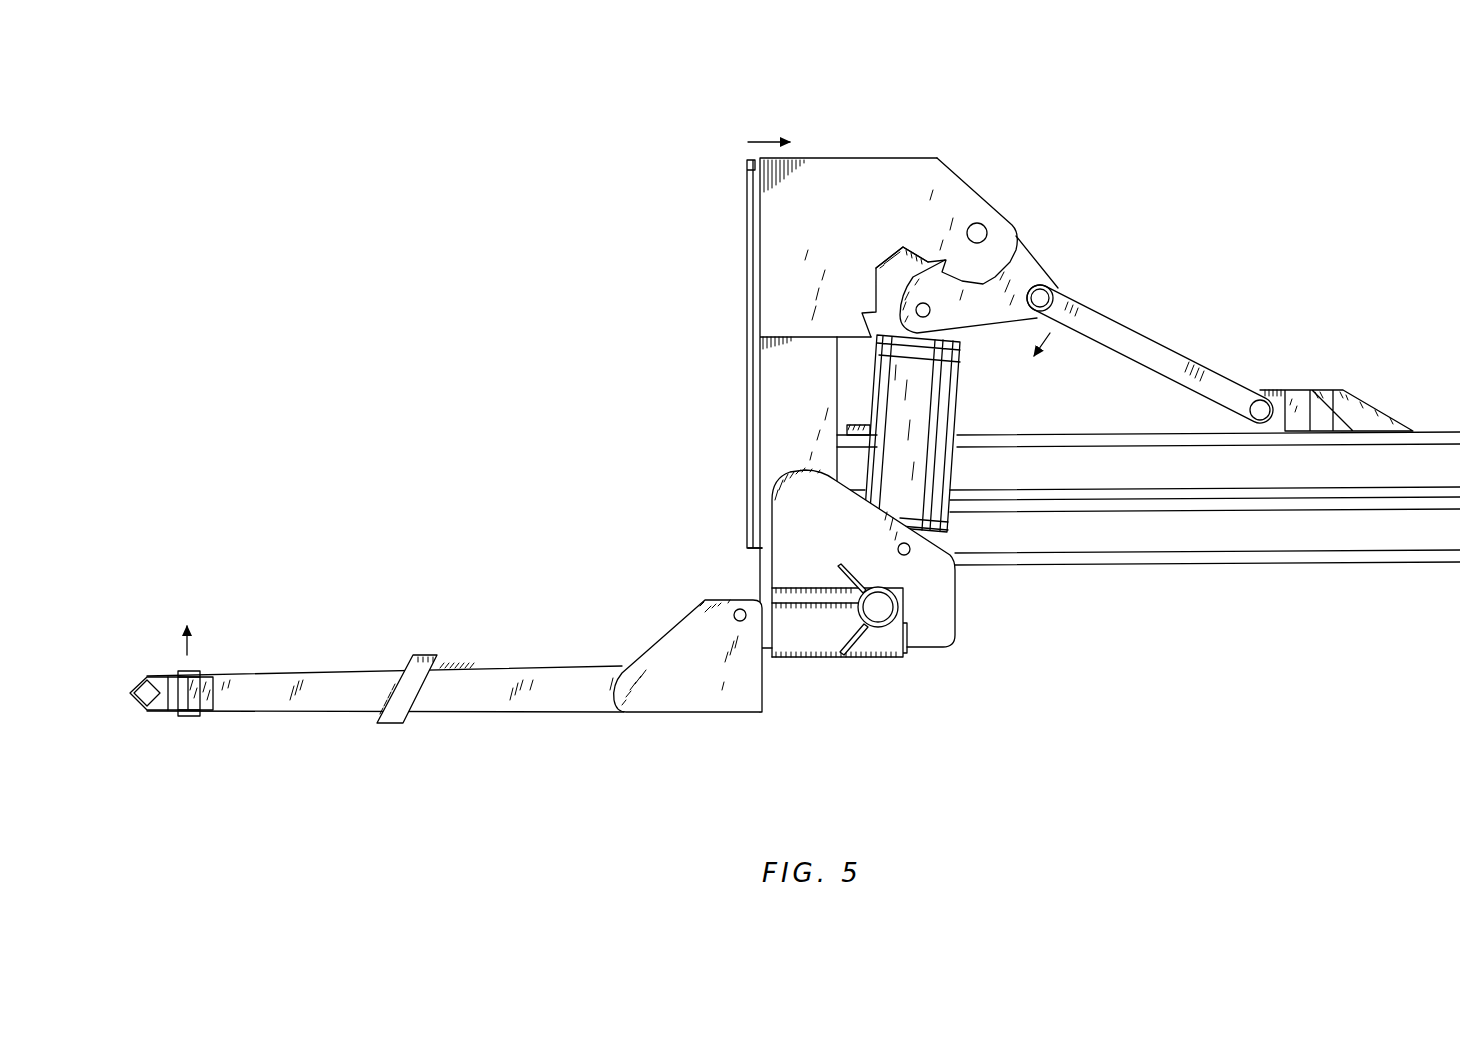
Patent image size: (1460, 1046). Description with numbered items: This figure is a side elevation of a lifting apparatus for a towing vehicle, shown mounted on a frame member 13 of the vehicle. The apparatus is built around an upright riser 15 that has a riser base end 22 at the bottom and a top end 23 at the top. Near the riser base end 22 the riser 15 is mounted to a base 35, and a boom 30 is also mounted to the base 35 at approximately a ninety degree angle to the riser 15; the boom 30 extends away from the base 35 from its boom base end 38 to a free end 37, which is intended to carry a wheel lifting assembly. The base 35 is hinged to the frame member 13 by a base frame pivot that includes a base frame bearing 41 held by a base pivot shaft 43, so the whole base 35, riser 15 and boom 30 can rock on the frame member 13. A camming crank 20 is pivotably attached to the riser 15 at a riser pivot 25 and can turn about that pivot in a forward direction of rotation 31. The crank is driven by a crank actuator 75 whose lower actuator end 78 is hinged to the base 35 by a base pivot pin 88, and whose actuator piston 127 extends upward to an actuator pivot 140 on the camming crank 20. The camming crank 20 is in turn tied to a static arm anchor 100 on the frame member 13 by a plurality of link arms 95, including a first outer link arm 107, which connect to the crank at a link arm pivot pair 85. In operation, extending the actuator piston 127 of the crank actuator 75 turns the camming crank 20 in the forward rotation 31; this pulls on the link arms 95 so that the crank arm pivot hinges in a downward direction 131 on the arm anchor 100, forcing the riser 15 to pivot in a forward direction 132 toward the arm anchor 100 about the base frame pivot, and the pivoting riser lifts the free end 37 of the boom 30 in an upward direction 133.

The frame member 13 is at (1073, 535).
The riser 15 is at (768, 405).
The camming crank 20 is at (1044, 252).
The riser base end 22 is at (748, 540).
The top end 23 is at (752, 180).
The riser pivot 25 is at (1007, 190).
The boom 30 is at (450, 703).
The forward direction of rotation 31 is at (988, 218).
The base 35 is at (808, 617).
The free end 37 is at (200, 705).
The boom base end 38 is at (690, 698).
The base frame bearing 41 is at (907, 617).
The base pivot shaft 43 is at (877, 600).
The crank actuator 75 is at (937, 417).
The lower actuator end 78 is at (910, 512).
The link arm pivot pair 85 is at (960, 578).
The base pivot pin 88 is at (909, 556).
The link arms 95 is at (1200, 340).
The arm anchor 100 is at (1290, 392).
The first outer link arm 107 is at (1115, 338).
The actuator piston 127 is at (913, 328).
The downward direction 131 is at (1050, 333).
The forward direction 132 is at (768, 142).
The upward direction 133 is at (190, 647).
The actuator pivot 140 is at (890, 288).